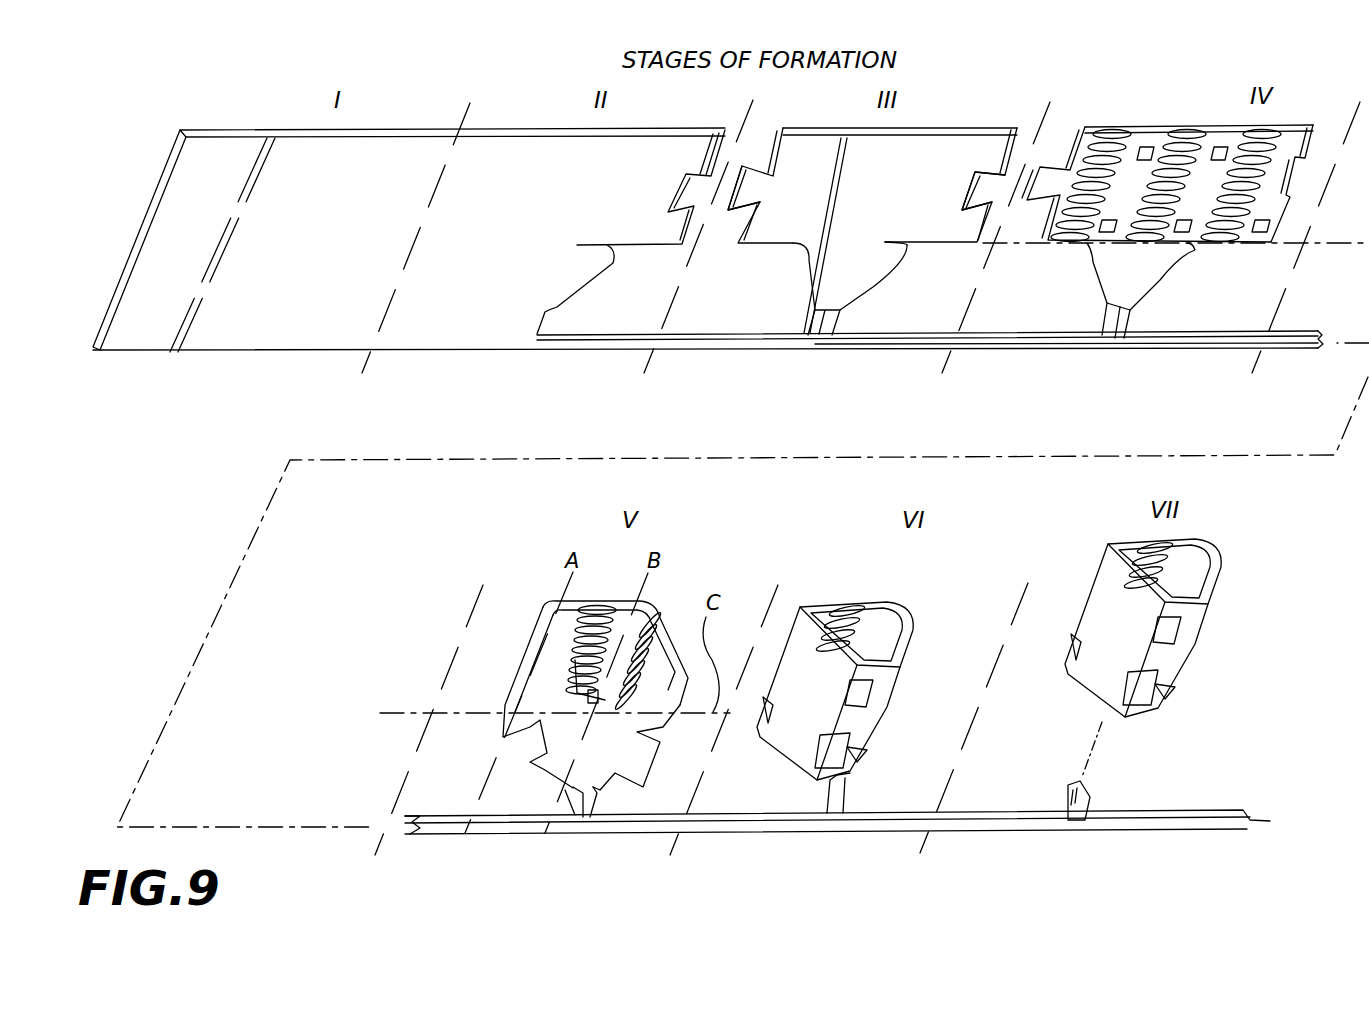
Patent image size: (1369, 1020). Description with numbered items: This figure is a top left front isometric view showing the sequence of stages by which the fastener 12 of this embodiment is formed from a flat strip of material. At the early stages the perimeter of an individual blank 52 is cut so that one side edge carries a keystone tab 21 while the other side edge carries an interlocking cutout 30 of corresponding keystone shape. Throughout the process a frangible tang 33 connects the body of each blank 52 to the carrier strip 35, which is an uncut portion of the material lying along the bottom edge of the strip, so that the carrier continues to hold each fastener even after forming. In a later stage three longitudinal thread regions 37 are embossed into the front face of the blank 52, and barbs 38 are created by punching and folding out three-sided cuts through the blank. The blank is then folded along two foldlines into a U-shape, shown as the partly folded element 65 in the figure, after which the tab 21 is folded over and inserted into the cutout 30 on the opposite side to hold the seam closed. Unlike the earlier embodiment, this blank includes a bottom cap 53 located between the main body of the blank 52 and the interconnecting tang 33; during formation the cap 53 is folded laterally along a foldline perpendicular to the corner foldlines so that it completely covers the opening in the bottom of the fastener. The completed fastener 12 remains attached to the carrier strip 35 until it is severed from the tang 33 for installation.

The fastener 12 is at (1222, 580).
The keystone tab 21 is at (757, 170).
The interlocking cutout 30 is at (973, 192).
The frangible tang 33 is at (818, 340).
The carrier strip 35 is at (1270, 821).
The longitudinal thread regions 37 is at (1253, 134).
The barbs 38 is at (1110, 232).
The blank 52 is at (893, 209).
The bottom cap 53 is at (850, 270).
The shell body 65 is at (817, 603).